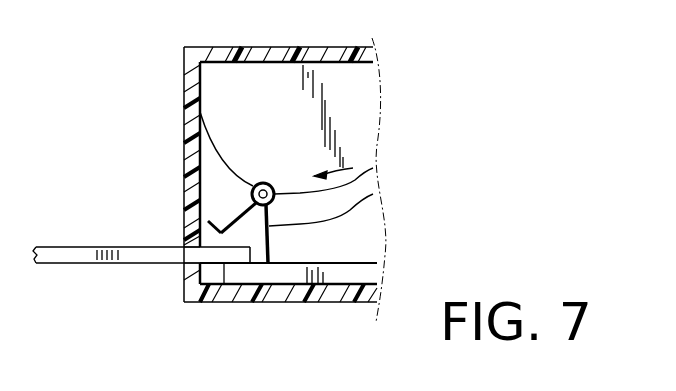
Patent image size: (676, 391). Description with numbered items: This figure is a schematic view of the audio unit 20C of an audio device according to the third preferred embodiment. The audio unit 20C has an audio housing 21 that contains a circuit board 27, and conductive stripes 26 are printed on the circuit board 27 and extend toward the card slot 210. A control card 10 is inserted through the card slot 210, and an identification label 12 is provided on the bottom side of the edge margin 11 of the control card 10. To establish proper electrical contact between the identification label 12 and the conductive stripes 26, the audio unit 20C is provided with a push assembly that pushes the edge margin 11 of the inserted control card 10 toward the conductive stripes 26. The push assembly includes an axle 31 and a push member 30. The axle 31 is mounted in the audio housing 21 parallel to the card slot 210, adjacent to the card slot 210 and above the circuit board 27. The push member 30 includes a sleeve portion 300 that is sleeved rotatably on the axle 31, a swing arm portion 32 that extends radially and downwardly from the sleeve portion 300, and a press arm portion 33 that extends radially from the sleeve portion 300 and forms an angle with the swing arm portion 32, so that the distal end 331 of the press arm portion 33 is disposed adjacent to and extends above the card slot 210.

The control card 10 is at (78, 244).
The card slot 210 is at (185, 246).
The identification label 12 is at (195, 263).
The edge margin 11 is at (221, 290).
The audio housing 21 is at (218, 47).
The audio unit 20C is at (346, 30).
The sleeve portion 300 is at (186, 106).
The press arm portion 33 is at (185, 145).
The distal end 331 is at (213, 222).
The push member 30 is at (337, 173).
The axle 31 is at (373, 168).
The swing arm portion 32 is at (373, 194).
The conductive stripes 26 is at (270, 232).
The circuit board 27 is at (341, 292).